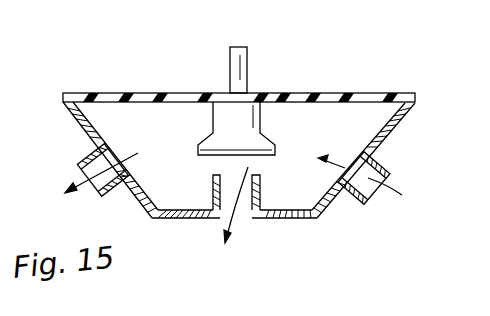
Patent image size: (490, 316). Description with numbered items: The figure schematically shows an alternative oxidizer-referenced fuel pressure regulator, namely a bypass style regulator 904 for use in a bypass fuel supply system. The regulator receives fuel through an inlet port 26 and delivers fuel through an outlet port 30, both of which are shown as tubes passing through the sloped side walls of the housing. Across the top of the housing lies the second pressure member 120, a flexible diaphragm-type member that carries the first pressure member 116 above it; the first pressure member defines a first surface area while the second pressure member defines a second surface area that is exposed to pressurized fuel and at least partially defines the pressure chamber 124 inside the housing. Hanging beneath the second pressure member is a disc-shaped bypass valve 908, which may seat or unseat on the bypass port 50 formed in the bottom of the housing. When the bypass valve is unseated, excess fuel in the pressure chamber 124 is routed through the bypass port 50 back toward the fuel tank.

The bypass style regulator 904 is at (368, 80).
The second pressure member 120 is at (173, 94).
The first pressure member 116 is at (246, 66).
The disc-shaped bypass valve 908 is at (261, 121).
The outlet port 30 is at (95, 157).
The inlet port 26 is at (378, 163).
The bypass port 50 is at (262, 210).
The pressure chamber 124 is at (198, 179).